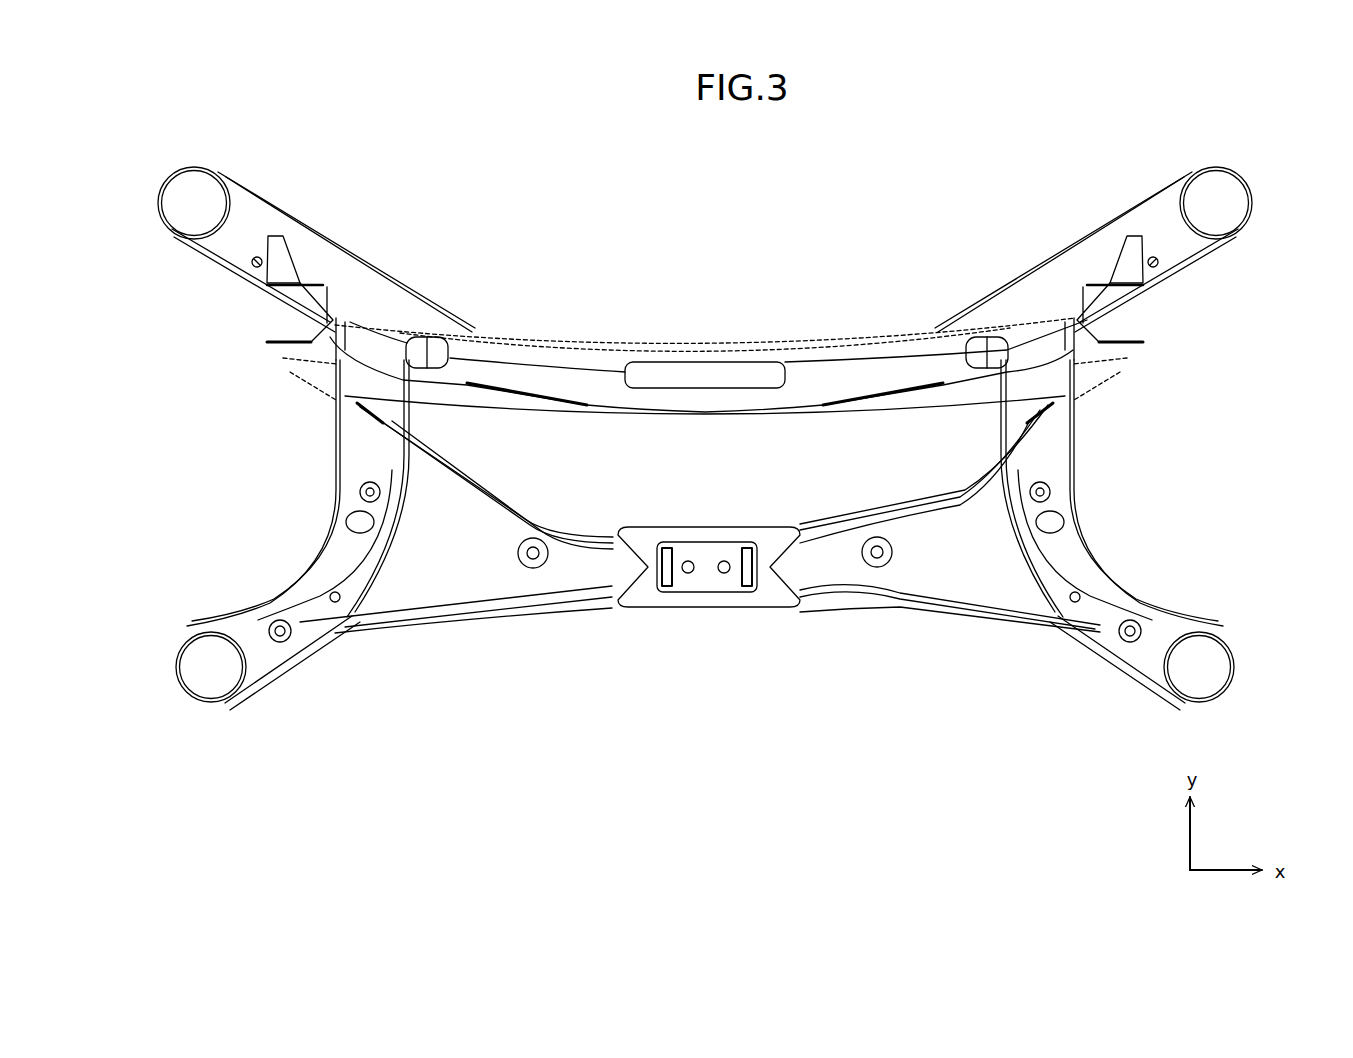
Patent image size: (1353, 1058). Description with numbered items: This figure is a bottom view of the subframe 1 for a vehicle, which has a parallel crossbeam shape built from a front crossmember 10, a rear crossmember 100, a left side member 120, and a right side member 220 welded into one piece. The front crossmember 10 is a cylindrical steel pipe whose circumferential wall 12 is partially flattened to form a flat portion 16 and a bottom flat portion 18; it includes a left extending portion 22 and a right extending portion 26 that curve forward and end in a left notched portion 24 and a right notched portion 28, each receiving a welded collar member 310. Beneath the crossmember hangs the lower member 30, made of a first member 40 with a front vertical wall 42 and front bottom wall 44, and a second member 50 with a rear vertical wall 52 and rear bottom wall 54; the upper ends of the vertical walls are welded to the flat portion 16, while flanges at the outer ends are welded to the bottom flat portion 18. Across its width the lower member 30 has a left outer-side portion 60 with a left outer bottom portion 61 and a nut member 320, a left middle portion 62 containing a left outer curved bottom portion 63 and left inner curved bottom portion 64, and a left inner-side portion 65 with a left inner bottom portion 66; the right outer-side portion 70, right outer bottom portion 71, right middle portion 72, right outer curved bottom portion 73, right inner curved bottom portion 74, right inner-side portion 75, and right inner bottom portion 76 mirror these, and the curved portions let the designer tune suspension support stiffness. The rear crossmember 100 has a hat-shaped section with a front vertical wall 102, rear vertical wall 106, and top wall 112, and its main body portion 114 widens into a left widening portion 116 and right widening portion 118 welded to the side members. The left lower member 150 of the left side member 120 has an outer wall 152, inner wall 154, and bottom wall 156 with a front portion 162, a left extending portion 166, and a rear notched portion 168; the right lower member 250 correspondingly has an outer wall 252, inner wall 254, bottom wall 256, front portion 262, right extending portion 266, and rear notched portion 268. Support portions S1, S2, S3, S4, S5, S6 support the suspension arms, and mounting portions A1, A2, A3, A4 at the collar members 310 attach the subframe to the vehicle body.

The subframe 1 is at (922, 190).
The front crossmember 10 is at (1120, 150).
The circumferential wall 12 is at (1090, 265).
The flat portion 16 is at (520, 338).
The bottom flat portion 18 is at (345, 275).
The left extending portion 22 is at (1090, 230).
The left notched portion 24 is at (1200, 185).
The right extending portion 26 is at (275, 200).
The right notched portion 28 is at (232, 192).
The lower member 30 is at (708, 285).
The first member 40 is at (745, 320).
The front vertical wall 42 is at (580, 343).
The front bottom wall 44 is at (528, 338).
The second member 50 is at (800, 425).
The rear vertical wall 52 is at (575, 398).
The rear bottom wall 54 is at (520, 390).
The left outer-side portion 60 is at (1020, 330).
The left outer bottom portion 61 is at (1045, 323).
The left middle portion 62 is at (918, 328).
The left outer curved bottom portion 63 is at (982, 328).
The left inner curved bottom portion 64 is at (882, 338).
The left inner-side portion 65 is at (838, 340).
The left inner bottom portion 66 is at (805, 346).
The right outer-side portion 70 is at (398, 318).
The right outer bottom portion 71 is at (372, 322).
The right middle portion 72 is at (498, 335).
The right outer curved bottom portion 73 is at (460, 330).
The right inner curved bottom portion 74 is at (548, 340).
The right inner-side portion 75 is at (618, 345).
The right inner bottom portion 76 is at (600, 345).
The rear crossmember 100 is at (620, 635).
The front vertical wall 102 is at (820, 540).
The rear vertical wall 106 is at (835, 600).
The top wall 112 is at (935, 600).
The main body portion 114 is at (705, 625).
The left widening portion 116 is at (950, 640).
The right widening portion 118 is at (445, 632).
The left side member 120 is at (1120, 470).
The left lower member 150 is at (1095, 445).
The outer wall 152 is at (1068, 470).
The inner wall 154 is at (1010, 402).
The bottom wall 156 is at (1075, 590).
The front portion 162 is at (1105, 395).
The left extending portion 166 is at (1150, 580).
The rear notched portion 168 is at (1225, 640).
The right side member 220 is at (215, 505).
The right lower member 250 is at (320, 478).
The outer wall 252 is at (340, 445).
The inner wall 254 is at (405, 402).
The bottom wall 256 is at (345, 583).
The front portion 262 is at (340, 395).
The right extending portion 266 is at (262, 580).
The rear notched portion 268 is at (195, 632).
The collar member 310 is at (200, 168).
The nut member 320 is at (290, 272).
The first mounting portion A1 is at (1270, 170).
The second mounting portion A2 is at (1250, 688).
The third mounting portion A3 is at (162, 168).
The fourth mounting portion A4 is at (160, 688).
The first support portion S1 is at (1125, 322).
The second support portion S2 is at (272, 322).
The third support portion S3 is at (815, 570).
The fourth support portion S4 is at (612, 570).
The fifth support portion S5 is at (1135, 360).
The sixth support portion S6 is at (275, 360).